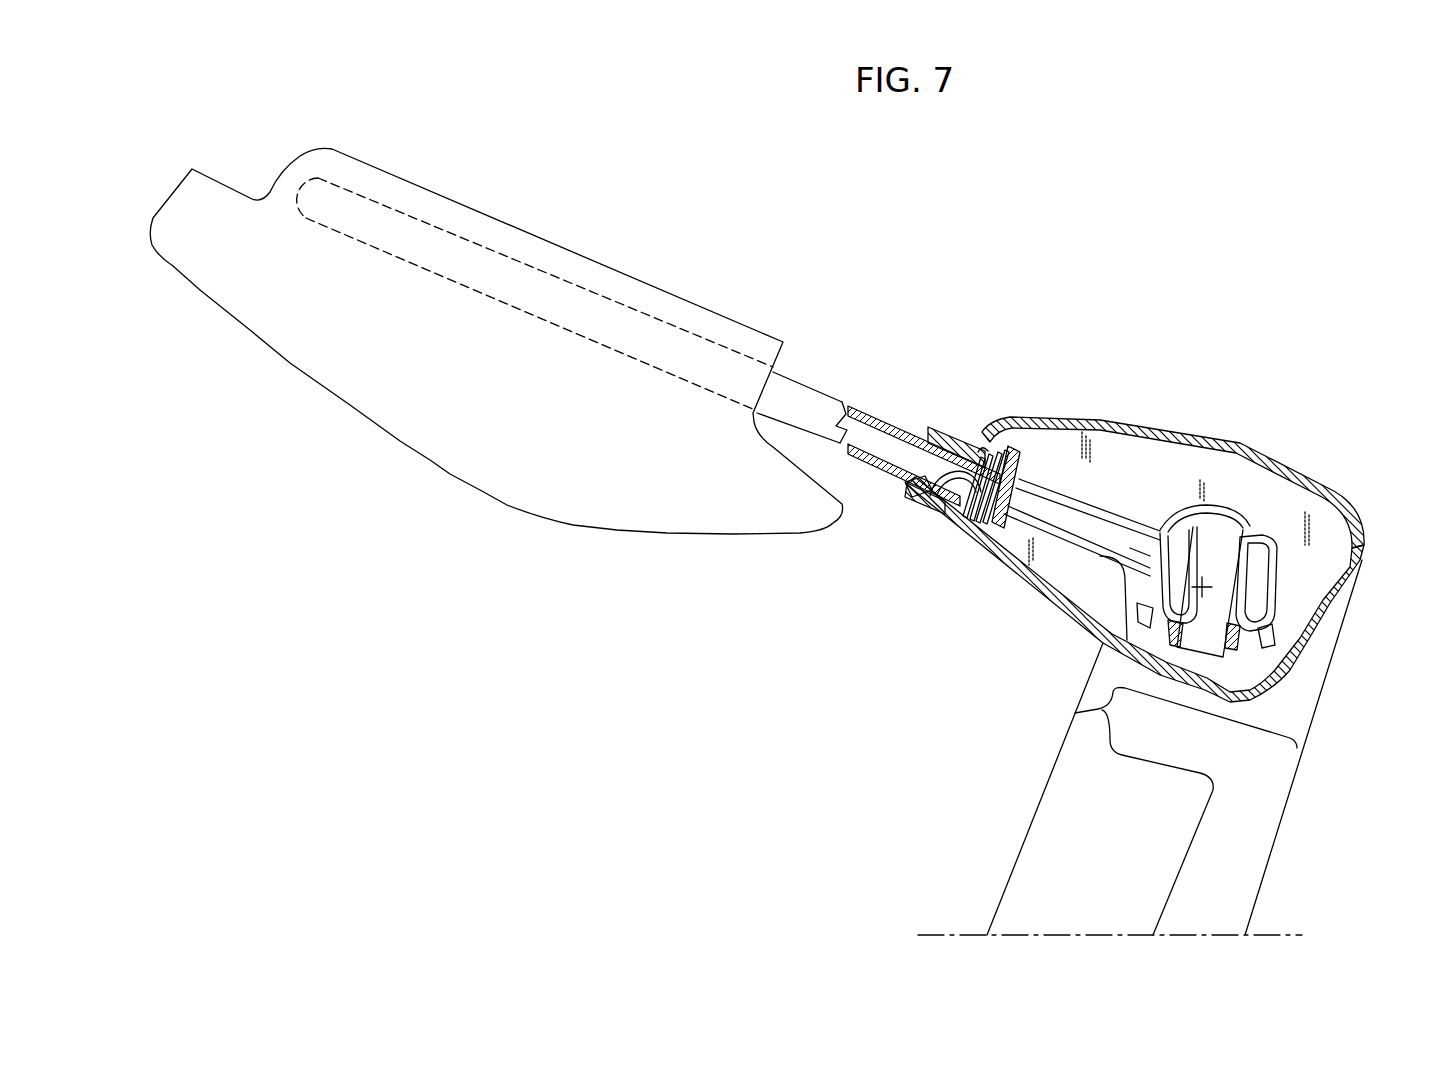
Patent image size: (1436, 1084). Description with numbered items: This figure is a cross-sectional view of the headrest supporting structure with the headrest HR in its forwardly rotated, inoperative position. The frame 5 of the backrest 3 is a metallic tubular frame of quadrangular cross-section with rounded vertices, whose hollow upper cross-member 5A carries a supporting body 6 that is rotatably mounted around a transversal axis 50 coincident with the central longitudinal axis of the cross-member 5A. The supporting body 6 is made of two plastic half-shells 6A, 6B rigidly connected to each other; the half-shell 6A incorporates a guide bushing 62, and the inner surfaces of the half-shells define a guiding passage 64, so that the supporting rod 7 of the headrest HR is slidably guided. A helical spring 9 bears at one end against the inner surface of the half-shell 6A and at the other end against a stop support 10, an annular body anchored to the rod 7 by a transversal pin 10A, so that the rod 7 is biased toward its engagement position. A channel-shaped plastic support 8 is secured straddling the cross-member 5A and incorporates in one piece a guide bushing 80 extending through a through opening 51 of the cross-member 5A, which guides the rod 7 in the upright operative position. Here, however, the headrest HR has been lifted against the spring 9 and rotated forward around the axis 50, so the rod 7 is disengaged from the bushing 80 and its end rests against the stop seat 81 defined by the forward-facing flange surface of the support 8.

The headrest HR is at (399, 452).
The supporting rod 7 is at (807, 388).
The guide bushing 62 is at (931, 431).
The helical spring 9 is at (962, 486).
The stop support 10 is at (1031, 424).
The transversal pin 10A is at (1028, 446).
The guiding passage 64 is at (1103, 508).
The supporting body 6 is at (1134, 499).
The half-shell 6A is at (1000, 548).
The half-shell 6B is at (1195, 437).
The channel-shaped support 8 is at (1245, 584).
The through opening 51 is at (1195, 535).
The guide bushing 80 is at (1240, 577).
The frame 5 is at (1220, 653).
The upper cross-member 5A is at (1250, 645).
The stop seat 81 is at (1135, 553).
The transversal axis 50 is at (1218, 596).
The backrest 3 is at (1012, 848).